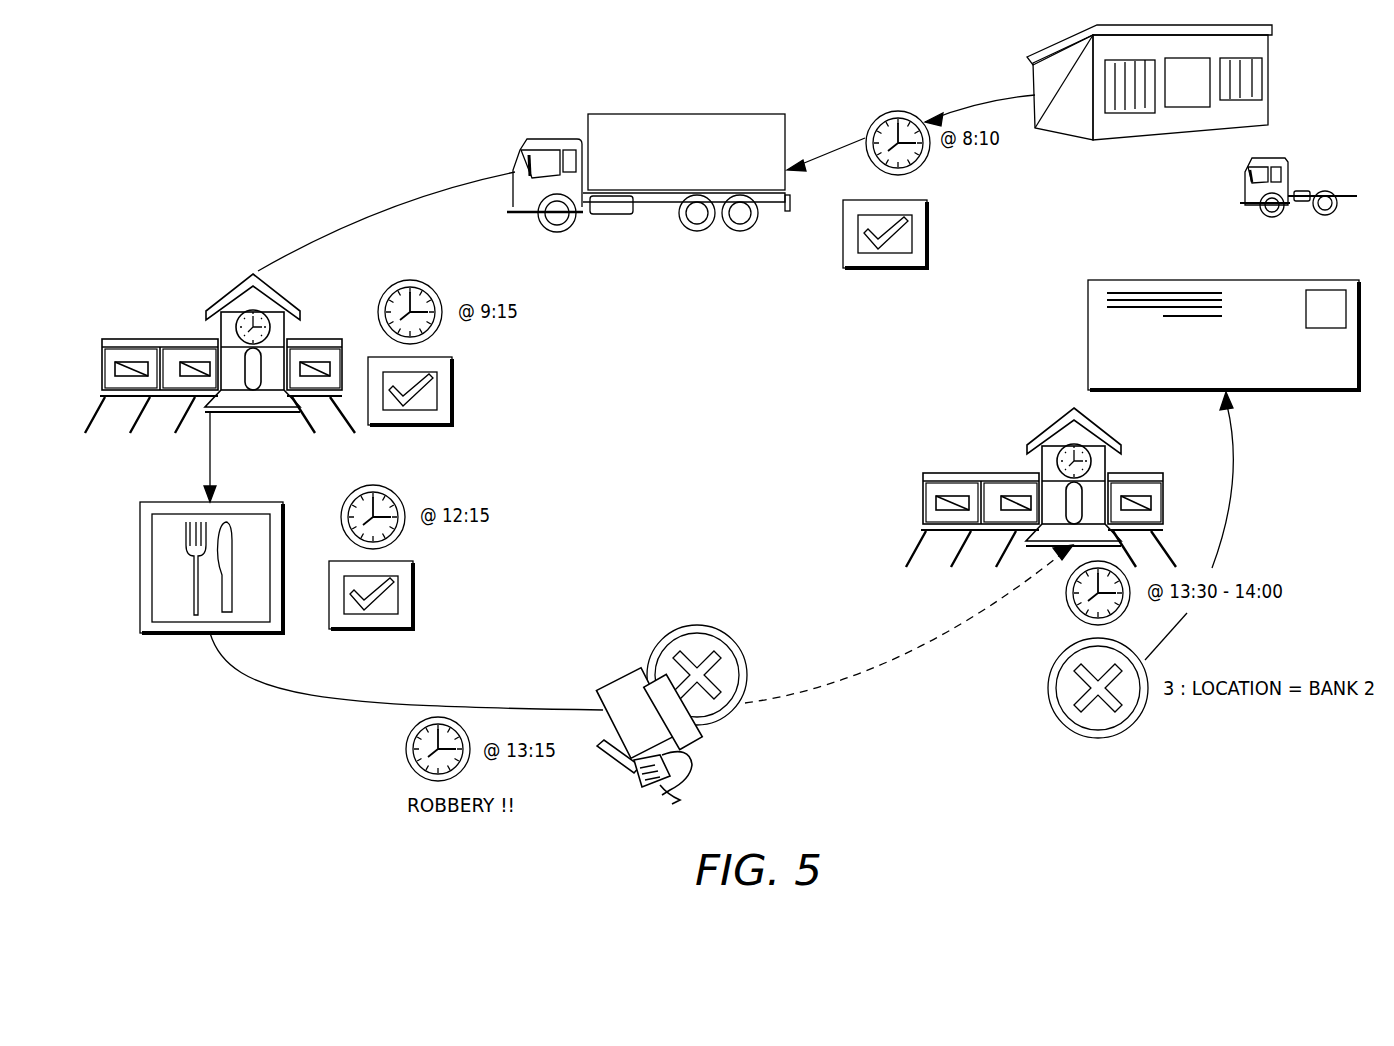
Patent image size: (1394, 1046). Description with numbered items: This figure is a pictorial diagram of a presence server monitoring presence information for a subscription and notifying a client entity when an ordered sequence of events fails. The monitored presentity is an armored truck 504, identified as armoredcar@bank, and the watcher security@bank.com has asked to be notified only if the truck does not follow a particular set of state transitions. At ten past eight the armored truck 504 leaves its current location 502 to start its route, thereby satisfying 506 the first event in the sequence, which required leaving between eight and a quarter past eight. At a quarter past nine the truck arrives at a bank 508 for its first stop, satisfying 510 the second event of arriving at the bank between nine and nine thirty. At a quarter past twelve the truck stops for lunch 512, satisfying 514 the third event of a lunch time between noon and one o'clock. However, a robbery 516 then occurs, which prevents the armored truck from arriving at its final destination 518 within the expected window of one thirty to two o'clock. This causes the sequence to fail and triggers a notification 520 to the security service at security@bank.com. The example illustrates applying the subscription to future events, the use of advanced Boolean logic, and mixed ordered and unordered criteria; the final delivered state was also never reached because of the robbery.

The current location 502 is at (1272, 75).
The armored truck 504 is at (796, 100).
The satisfying a first event 506 is at (905, 200).
The bank 508 is at (146, 337).
The satisfying a second event 510 is at (438, 425).
The lunch stop 512 is at (152, 500).
The satisfying a third event 514 is at (548, 576).
The robbery 516 is at (705, 736).
The final destination 518 is at (982, 472).
The notification 520 is at (1328, 278).